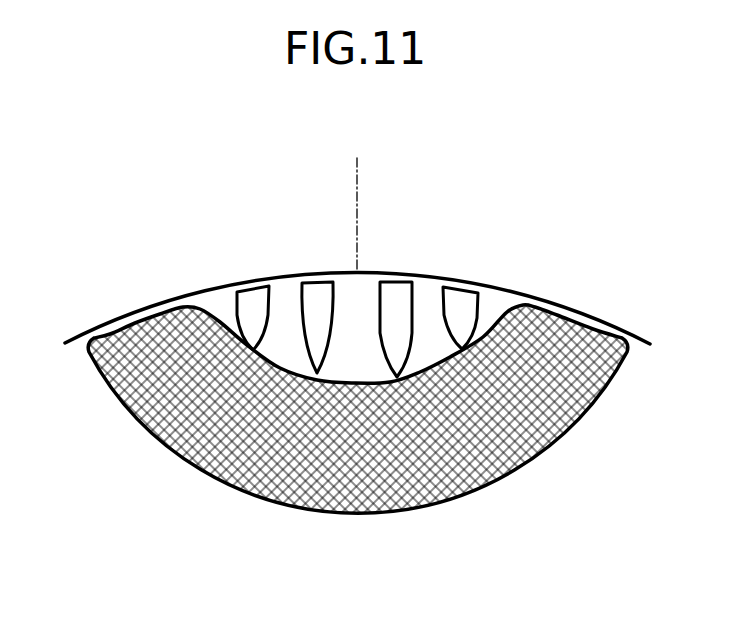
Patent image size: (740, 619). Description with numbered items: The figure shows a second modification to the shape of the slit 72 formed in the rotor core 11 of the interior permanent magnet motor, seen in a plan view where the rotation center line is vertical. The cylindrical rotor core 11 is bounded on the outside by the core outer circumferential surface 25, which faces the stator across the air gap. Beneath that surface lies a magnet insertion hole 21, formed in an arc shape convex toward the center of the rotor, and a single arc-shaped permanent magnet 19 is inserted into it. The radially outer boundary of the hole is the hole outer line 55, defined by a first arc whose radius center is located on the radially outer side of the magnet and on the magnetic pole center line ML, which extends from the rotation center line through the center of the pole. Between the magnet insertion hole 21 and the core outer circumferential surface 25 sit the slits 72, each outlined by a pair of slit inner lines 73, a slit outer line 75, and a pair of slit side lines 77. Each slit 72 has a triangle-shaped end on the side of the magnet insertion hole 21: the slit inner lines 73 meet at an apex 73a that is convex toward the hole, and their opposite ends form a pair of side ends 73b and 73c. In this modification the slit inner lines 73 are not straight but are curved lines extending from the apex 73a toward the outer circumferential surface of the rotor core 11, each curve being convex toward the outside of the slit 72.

The rotor core 11 is at (80, 338).
The core outer circumferential surface 25 is at (134, 310).
The permanent magnet 19 is at (577, 400).
The hole outer line 55 is at (497, 332).
The magnet insertion hole 21 is at (588, 328).
The slit inner line 73 is at (381, 352).
The apex 73a is at (397, 378).
The side end 73b is at (414, 330).
The side end 73c is at (381, 340).
The slit 72 is at (401, 282).
The slit outer line 75 is at (408, 282).
The slit side line 77 is at (376, 288).
The magnetic pole center line ML is at (353, 162).